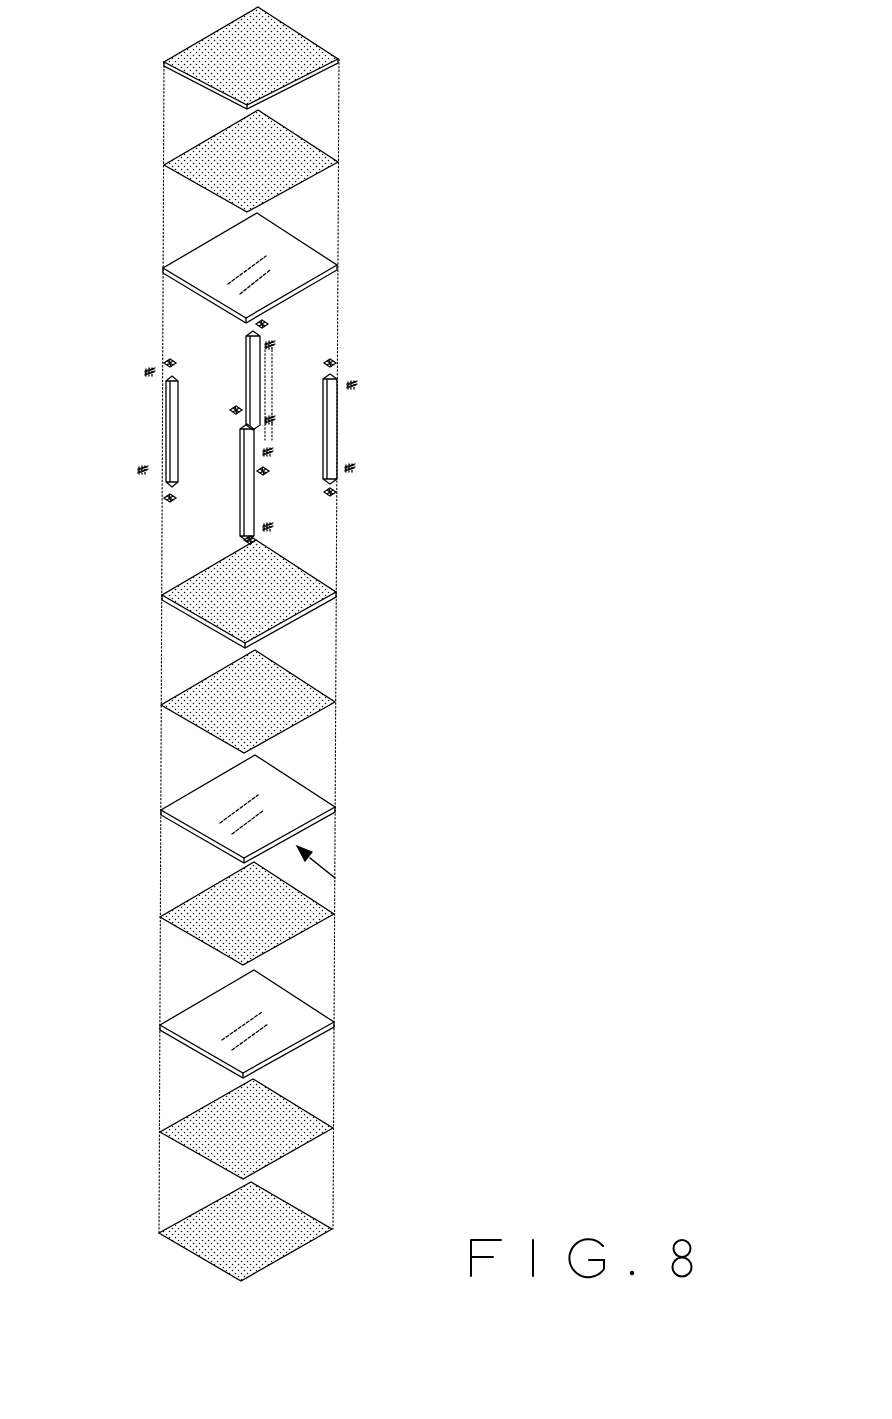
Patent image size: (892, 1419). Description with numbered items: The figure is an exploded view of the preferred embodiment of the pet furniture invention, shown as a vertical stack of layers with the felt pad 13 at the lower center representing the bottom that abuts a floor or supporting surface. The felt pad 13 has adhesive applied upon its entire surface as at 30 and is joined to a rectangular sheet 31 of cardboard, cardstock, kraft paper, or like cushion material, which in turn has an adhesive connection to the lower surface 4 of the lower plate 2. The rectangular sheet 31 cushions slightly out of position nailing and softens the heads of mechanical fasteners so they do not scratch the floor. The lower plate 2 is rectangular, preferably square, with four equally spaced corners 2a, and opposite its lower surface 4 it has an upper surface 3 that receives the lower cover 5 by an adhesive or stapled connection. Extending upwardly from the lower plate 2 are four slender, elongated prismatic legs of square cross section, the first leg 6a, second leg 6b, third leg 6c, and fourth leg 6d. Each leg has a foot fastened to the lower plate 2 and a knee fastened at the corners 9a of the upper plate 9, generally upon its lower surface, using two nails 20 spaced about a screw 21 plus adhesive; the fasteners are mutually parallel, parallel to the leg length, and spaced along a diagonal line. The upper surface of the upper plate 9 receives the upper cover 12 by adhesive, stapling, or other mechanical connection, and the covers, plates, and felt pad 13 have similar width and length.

The upper cover 12 is at (312, 50).
The adhesive 30 is at (302, 135).
The upper plate 9 is at (210, 232).
The corners of the upper plate 9a is at (258, 220).
The first leg 6a is at (166, 425).
The second leg 6b is at (240, 474).
The third leg 6c is at (246, 384).
The fourth leg 6d is at (340, 425).
The nails 20 is at (146, 370).
The screw 21 is at (154, 366).
The lower cover 5 is at (205, 603).
The lower plate 2 is at (318, 823).
The corners of the lower plate 2a is at (272, 765).
The upper surface of the lower plate 3 is at (292, 813).
The lower surface of the lower plate 4 is at (335, 878).
The rectangular sheet 31 is at (312, 1040).
The felt pad 13 is at (298, 1260).